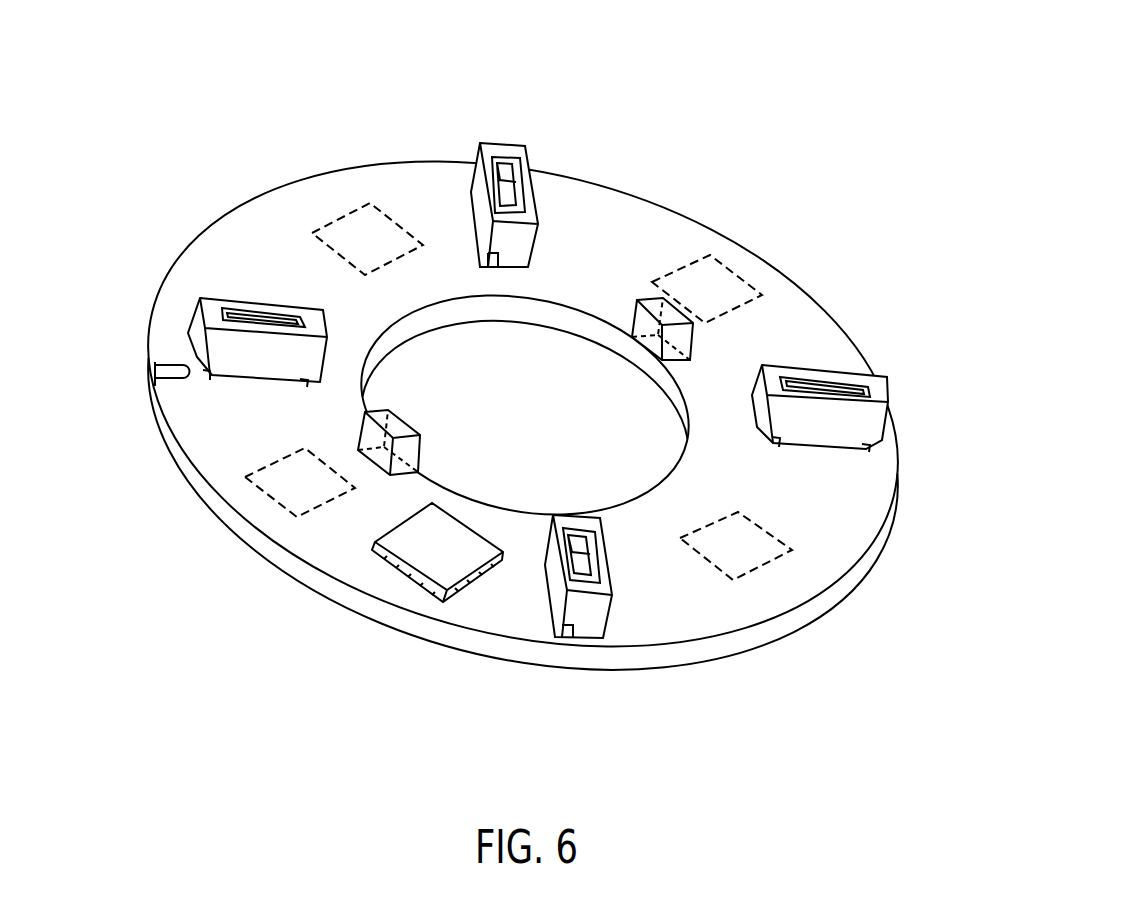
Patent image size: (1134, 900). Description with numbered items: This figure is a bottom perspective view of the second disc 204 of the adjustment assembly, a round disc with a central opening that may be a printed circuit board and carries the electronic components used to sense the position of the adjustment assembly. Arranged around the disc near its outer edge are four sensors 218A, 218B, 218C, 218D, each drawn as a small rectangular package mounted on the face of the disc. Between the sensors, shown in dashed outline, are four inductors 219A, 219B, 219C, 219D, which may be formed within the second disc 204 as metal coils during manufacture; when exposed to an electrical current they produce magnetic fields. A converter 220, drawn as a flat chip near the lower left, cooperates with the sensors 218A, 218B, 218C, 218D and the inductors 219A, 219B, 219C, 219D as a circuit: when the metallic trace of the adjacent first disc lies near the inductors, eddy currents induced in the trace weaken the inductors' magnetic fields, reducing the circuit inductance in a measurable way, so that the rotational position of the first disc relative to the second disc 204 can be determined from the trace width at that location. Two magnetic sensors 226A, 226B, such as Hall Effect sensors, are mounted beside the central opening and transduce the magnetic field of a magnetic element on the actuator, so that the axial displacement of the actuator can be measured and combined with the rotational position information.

The second disc 204 is at (687, 123).
The sensor 218A is at (515, 150).
The sensor 218B is at (860, 427).
The sensor 218C is at (588, 630).
The sensor 218D is at (212, 317).
The inductor 219A is at (348, 237).
The inductor 219B is at (700, 282).
The inductor 219C is at (753, 548).
The inductor 219D is at (292, 482).
The converter 220 is at (417, 547).
The magnetic sensor 226A is at (382, 405).
The magnetic sensor 226B is at (655, 348).